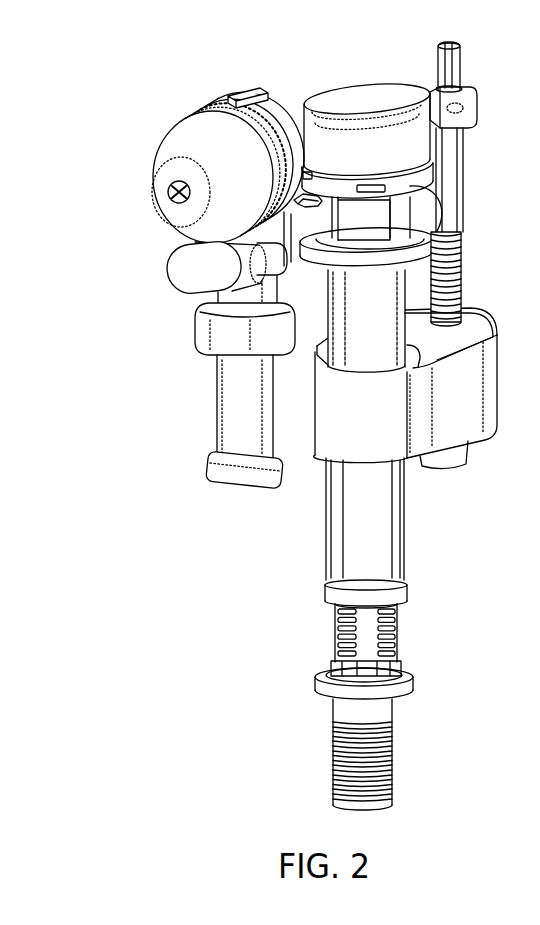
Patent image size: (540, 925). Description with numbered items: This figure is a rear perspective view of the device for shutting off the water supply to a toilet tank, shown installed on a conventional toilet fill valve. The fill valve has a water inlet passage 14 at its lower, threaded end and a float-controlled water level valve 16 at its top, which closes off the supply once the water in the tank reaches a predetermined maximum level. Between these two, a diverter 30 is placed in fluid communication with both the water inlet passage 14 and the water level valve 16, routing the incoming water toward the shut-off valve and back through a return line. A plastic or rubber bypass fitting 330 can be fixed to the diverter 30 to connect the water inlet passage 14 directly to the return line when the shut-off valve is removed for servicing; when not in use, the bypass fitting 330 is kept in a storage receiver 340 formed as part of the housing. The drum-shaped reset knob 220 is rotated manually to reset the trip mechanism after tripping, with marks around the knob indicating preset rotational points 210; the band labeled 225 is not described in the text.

The water inlet passage 14 is at (372, 530).
The water level valve 16 is at (387, 107).
The diverter 30 is at (390, 217).
The preset rotational points 210 is at (245, 92).
The reset knob 220 is at (175, 147).
The knurled indicia ring 225 is at (227, 100).
The bypass fitting 330 is at (178, 291).
The storage receiver 340 is at (250, 257).